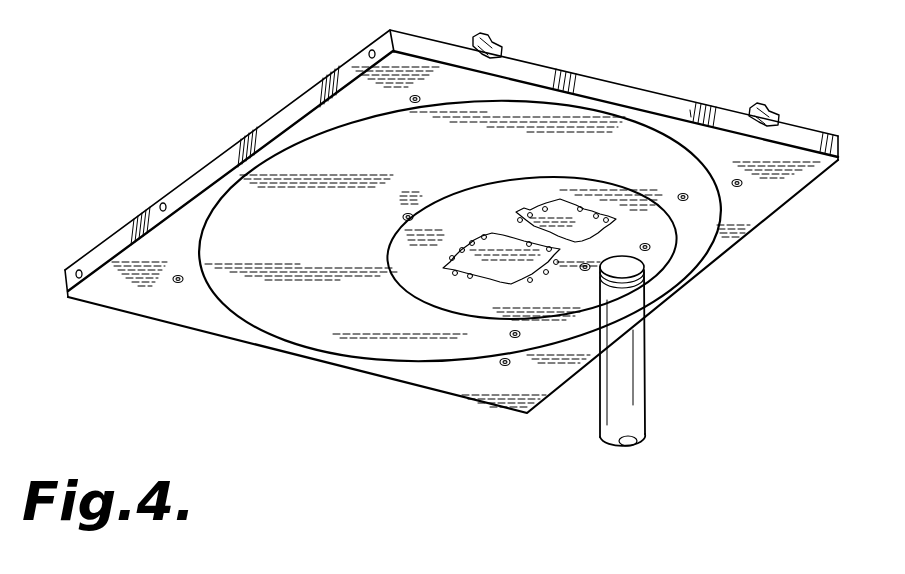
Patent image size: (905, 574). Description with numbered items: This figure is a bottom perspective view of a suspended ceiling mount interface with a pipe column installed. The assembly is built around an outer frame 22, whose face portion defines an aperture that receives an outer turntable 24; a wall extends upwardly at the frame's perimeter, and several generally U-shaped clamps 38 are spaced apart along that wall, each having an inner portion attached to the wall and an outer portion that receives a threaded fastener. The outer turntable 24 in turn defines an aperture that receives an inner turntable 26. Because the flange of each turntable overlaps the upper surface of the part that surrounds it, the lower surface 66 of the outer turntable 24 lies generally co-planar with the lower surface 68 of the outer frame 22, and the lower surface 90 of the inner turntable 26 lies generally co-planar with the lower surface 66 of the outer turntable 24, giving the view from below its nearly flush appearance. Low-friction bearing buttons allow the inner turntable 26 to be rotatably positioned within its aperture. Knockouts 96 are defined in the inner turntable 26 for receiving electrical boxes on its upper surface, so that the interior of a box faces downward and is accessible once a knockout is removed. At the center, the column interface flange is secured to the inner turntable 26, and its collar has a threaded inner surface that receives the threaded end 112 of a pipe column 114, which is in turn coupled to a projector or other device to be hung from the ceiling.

The outer frame 22 is at (669, 107).
The outer turntable 24 is at (307, 160).
The inner turntable 26 is at (513, 303).
The clamp 38 is at (497, 35).
The lower surface of outer turntable 66 is at (322, 238).
The lower surface of outer frame 68 is at (197, 311).
The lower surface of inner turntable 90 is at (578, 300).
The knockouts 96 is at (549, 207).
The threaded end 112 is at (643, 273).
The pipe column 114 is at (637, 351).